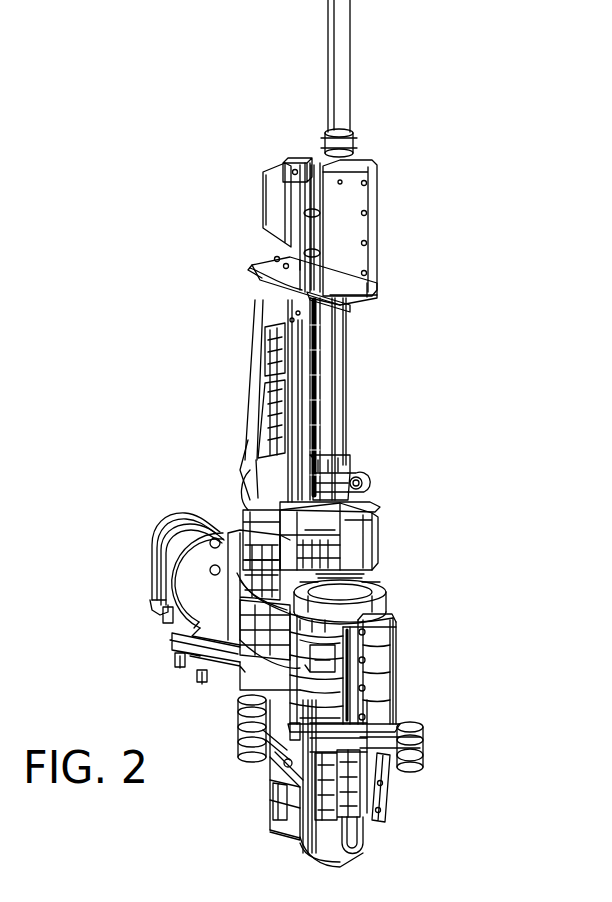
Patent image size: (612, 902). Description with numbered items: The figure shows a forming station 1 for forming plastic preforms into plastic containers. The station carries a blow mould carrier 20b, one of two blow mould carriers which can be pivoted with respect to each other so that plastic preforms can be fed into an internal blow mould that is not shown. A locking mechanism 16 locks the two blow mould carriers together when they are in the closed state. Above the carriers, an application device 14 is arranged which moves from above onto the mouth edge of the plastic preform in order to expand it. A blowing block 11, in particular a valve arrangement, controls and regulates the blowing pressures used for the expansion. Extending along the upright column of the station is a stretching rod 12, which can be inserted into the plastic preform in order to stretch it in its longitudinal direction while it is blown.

The forming station 1 is at (428, 322).
The stretching rod 12 is at (338, 405).
The blowing block 11 is at (360, 541).
The application device 14 is at (378, 598).
The blow mould carrier 20b is at (388, 644).
The locking mechanism 16 is at (385, 709).